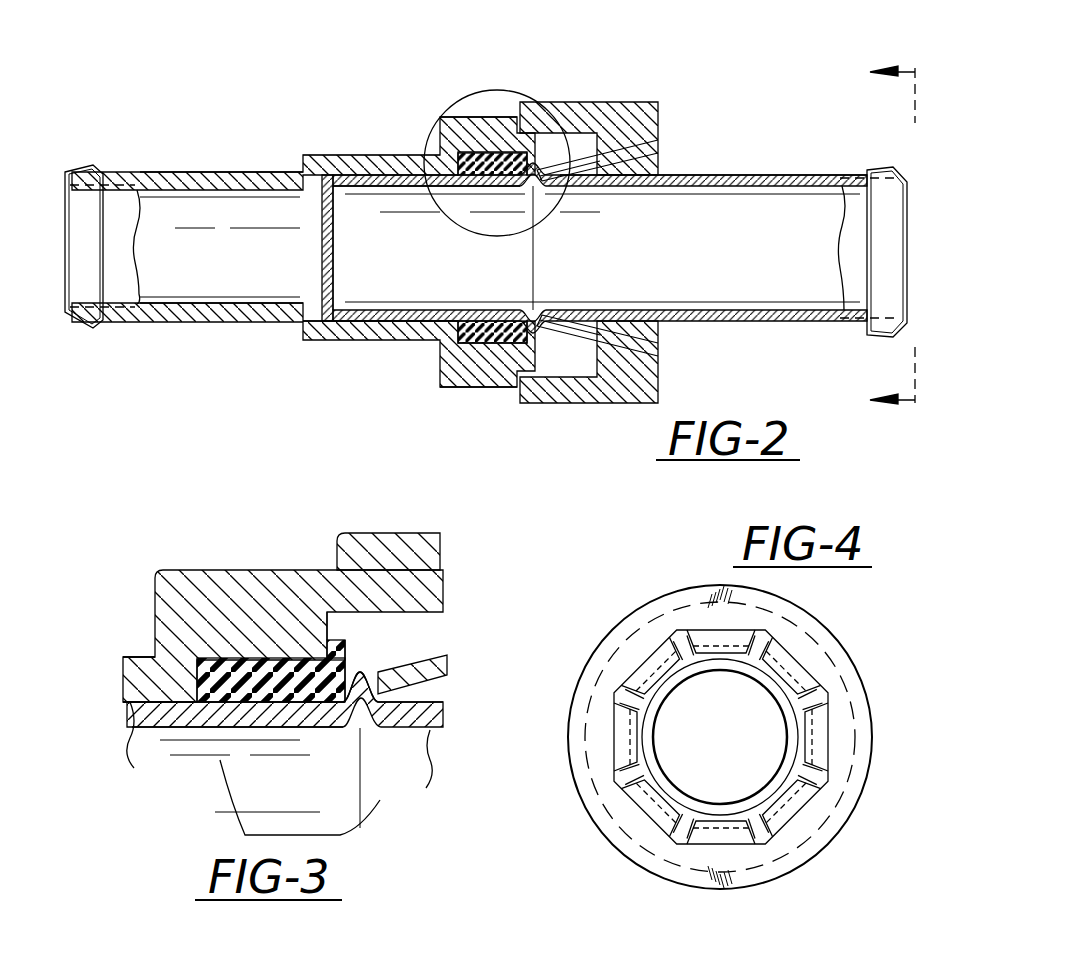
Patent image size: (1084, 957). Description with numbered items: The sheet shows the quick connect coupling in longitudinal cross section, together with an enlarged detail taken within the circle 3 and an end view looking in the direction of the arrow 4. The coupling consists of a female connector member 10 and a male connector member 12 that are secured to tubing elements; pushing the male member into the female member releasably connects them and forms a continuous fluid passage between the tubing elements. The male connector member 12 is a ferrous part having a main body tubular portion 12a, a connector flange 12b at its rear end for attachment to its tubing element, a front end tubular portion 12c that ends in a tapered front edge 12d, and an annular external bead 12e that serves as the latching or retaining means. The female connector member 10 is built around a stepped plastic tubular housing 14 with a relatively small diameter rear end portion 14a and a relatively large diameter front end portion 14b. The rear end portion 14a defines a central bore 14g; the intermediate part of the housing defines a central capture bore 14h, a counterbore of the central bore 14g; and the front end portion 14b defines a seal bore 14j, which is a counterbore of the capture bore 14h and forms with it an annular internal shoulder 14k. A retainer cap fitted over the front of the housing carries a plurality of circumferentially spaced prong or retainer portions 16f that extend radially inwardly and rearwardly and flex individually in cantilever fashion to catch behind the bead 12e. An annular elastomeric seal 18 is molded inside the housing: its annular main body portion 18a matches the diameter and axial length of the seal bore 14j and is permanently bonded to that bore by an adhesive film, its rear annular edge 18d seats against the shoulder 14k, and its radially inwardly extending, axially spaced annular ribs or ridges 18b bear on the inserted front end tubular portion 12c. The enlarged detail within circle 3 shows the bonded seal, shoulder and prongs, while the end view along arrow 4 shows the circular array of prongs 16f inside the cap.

In FIG. 2, the female connector member 10 is at (338, 134).
In FIG. 2, the male connector member 12 is at (770, 130).
In FIG. 3, the male connector member 12 is at (285, 753).
In FIG. 4, the male connector member 12 is at (720, 737).
In FIG. 2, the main body tubular portion 12a is at (712, 175).
In FIG. 3, the main body tubular portion 12a is at (426, 735).
In FIG. 2, the connector flange 12b is at (876, 167).
In FIG. 2, the front end tubular portion 12c is at (432, 188).
In FIG. 3, the front end tubular portion 12c is at (152, 736).
In FIG. 2, the tapered front edge 12d is at (342, 184).
In FIG. 2, the annular external bead 12e is at (561, 147).
In FIG. 3, the annular external bead 12e is at (372, 663).
In FIG. 4, the annular external bead 12e is at (721, 737).
In FIG. 2, the tubular housing 14 is at (106, 162).
In FIG. 3, the tubular housing 14 is at (283, 636).
In FIG. 2, the rear end portion 14a is at (215, 170).
In FIG. 2, the front end portion 14b is at (477, 116).
In FIG. 2, the central bore 14g is at (214, 308).
In FIG. 2, the central capture bore 14h is at (368, 318).
In FIG. 3, the central capture bore 14h is at (132, 722).
In FIG. 3, the seal bore 14j is at (226, 659).
In FIG. 3, the annular internal shoulder 14k is at (196, 669).
In FIG. 3, the prong or retainer portions 16f is at (444, 679).
In FIG. 2, the annular elastomeric seal 18 is at (492, 248).
In FIG. 3, the annular elastomeric seal 18 is at (258, 648).
In FIG. 3, the annular main body portion 18a is at (299, 659).
In FIG. 3, the annular ribs or ridges 18b is at (302, 702).
In FIG. 3, the rear annular edge 18d is at (160, 652).
In FIG. 2, the circle 3 is at (558, 224).
In FIG. 2, the arrow 4 is at (892, 243).